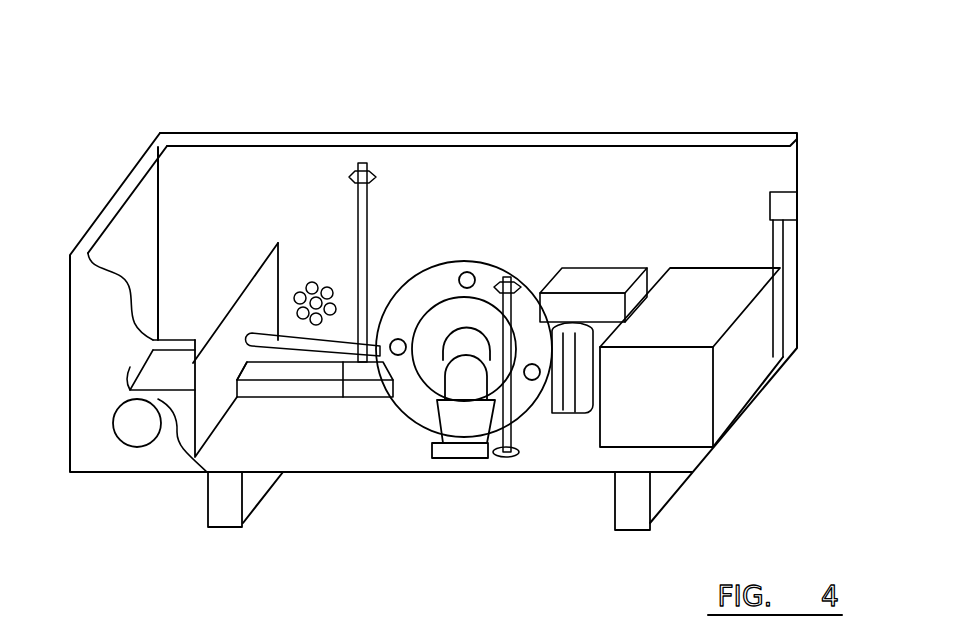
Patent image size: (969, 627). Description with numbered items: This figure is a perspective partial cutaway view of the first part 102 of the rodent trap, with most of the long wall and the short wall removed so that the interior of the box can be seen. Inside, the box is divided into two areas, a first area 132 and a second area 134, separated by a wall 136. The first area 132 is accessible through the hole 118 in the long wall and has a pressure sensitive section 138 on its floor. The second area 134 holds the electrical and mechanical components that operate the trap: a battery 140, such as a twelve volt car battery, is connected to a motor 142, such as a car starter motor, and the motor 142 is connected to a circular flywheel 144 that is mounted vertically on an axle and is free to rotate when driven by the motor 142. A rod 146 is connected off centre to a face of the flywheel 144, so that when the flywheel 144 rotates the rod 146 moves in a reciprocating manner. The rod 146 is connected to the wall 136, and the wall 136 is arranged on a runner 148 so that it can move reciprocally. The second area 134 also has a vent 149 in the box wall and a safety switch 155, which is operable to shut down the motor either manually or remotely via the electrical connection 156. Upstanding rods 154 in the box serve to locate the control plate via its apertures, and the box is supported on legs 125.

The first part 102 is at (708, 112).
The hole 118 is at (140, 420).
The support legs 125 is at (228, 517).
The first area 132 is at (208, 312).
The second area 134 is at (330, 267).
The wall 136 is at (200, 382).
The pressure sensitive section 138 is at (176, 358).
The battery 140 is at (637, 411).
The motor 142 is at (558, 304).
The circular flywheel 144 is at (440, 293).
The rod 146 is at (338, 356).
The runner 148 is at (297, 392).
The vent 149 is at (300, 284).
The upstanding rods 154 is at (372, 217).
The safety switch 155 is at (787, 203).
The electrical connection 156 is at (783, 248).